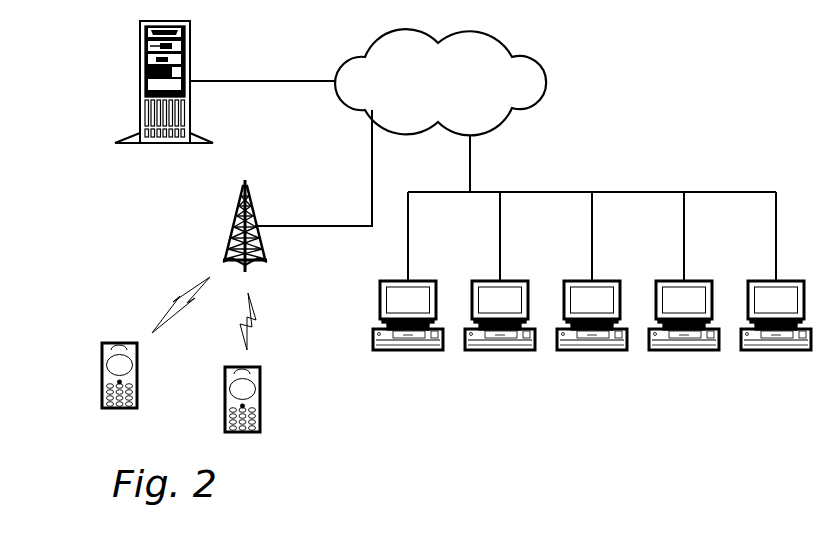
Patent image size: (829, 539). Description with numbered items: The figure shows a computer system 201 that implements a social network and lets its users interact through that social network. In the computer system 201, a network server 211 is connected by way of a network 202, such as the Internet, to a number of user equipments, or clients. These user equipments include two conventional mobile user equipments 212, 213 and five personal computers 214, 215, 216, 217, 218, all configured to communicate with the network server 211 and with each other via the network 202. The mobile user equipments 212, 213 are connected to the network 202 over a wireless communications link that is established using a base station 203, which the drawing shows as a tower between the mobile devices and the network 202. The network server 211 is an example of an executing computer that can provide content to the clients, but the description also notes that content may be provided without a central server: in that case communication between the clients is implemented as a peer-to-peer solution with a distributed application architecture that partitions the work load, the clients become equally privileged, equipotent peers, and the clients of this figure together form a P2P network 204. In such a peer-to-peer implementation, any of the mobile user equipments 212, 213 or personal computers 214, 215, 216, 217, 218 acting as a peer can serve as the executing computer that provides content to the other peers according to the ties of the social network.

The computer system 201 is at (668, 41).
The network 202 is at (421, 93).
The base station 203 is at (235, 215).
The P2P network 204 is at (668, 432).
The network server 211 is at (140, 80).
The mobile user equipment 212 is at (102, 360).
The mobile user equipment 213 is at (259, 371).
The personal computer 214 is at (406, 351).
The personal computer 215 is at (515, 351).
The personal computer 216 is at (601, 351).
The personal computer 217 is at (696, 351).
The personal computer 218 is at (783, 351).